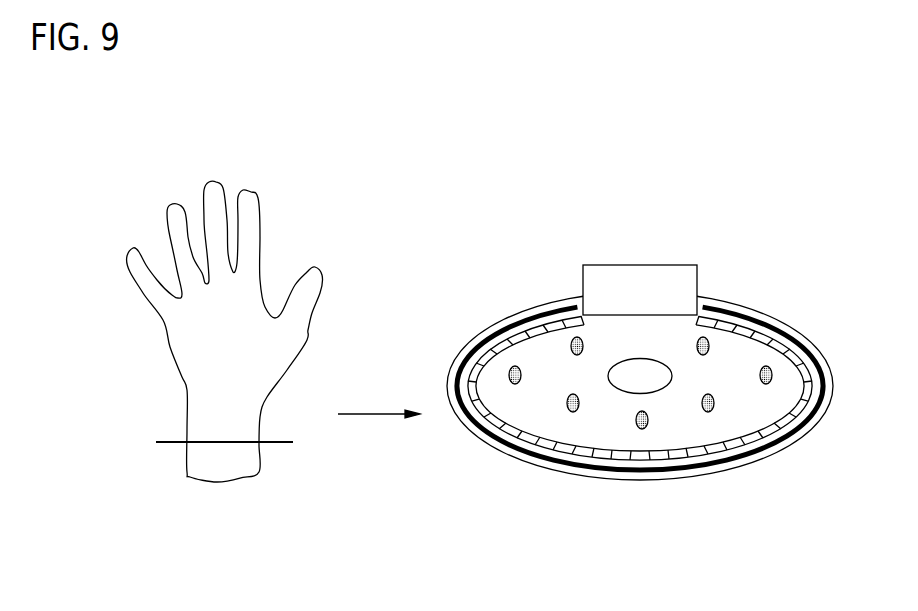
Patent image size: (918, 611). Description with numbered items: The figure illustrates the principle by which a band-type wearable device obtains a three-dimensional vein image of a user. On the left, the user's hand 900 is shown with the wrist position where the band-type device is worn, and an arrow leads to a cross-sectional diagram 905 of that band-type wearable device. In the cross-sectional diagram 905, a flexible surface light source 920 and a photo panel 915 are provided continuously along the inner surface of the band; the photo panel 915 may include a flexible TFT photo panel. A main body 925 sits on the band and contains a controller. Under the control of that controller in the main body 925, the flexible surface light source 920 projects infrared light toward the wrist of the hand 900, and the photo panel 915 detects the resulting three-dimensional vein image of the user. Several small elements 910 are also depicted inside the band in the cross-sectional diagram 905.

The hand 900 is at (187, 417).
The cross-sectional diagram 905 is at (641, 486).
The sensors 910 is at (563, 340).
The photo panel 915 is at (747, 448).
The flexible surface light source 920 is at (788, 435).
The main body 925 is at (640, 264).